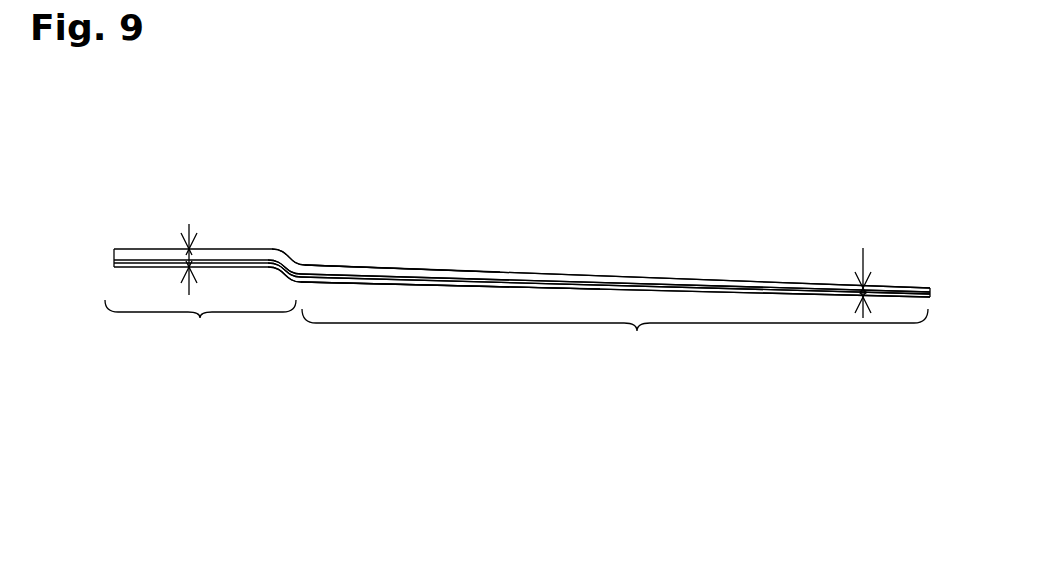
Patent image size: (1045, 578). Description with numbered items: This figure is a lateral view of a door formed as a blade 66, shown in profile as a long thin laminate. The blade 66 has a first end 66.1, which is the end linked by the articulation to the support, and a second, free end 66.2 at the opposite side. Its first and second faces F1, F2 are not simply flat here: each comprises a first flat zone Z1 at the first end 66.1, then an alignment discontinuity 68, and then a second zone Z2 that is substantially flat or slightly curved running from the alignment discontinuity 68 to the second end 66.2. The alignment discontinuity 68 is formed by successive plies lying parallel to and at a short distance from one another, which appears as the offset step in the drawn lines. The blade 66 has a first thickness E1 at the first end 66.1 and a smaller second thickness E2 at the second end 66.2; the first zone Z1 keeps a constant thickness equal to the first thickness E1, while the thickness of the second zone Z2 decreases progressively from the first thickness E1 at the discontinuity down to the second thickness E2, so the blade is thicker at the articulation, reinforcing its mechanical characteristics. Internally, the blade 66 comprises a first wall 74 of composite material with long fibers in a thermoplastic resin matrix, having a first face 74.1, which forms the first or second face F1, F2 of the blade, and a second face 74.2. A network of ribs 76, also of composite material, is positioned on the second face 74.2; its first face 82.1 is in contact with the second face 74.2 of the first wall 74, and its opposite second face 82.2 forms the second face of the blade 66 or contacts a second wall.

The blade 66 is at (511, 274).
The first end 66.1 is at (113, 258).
The second end 66.2 is at (935, 288).
The alignment discontinuity 68 is at (283, 277).
The first wall 74 is at (522, 334).
The first face of the first wall 74.1 is at (523, 288).
The second face of the first wall 74.2 is at (607, 280).
The network of ribs 76 is at (522, 220).
The first face of the network of ribs 82.1 is at (555, 284).
The second face of the network of ribs 82.2 is at (437, 269).
The first thickness E1 is at (192, 245).
The second thickness E2 is at (879, 279).
The first face F1 is at (459, 286).
The second face F2 is at (372, 267).
The first flat zone Z1 is at (200, 325).
The second zone Z2 is at (615, 338).